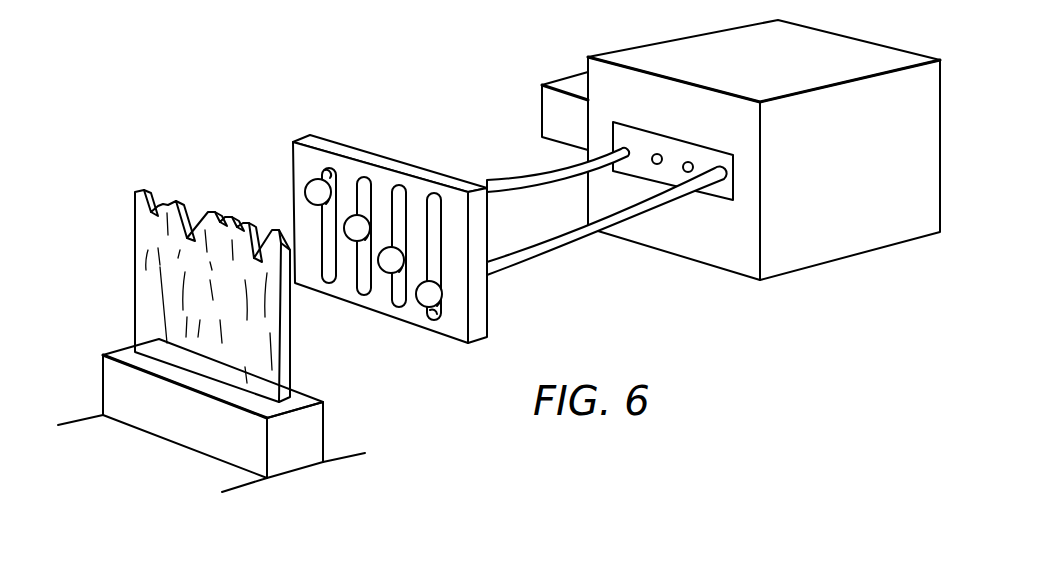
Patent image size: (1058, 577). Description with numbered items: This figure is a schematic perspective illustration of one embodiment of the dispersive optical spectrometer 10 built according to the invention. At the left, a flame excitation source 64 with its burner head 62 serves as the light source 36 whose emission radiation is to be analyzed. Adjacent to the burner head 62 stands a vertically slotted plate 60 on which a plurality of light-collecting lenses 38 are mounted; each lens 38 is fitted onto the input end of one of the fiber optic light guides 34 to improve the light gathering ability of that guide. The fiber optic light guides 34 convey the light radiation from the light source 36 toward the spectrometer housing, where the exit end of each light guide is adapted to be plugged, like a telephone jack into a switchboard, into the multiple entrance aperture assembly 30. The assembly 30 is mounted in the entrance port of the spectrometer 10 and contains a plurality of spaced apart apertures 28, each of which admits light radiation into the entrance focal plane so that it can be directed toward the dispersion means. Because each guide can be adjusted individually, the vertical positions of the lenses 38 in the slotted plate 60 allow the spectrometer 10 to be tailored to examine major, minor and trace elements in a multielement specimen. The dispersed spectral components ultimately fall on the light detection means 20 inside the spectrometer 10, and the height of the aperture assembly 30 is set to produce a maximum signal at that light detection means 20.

The dispersive optical spectrometer 10 is at (432, 103).
The light detection means 20 is at (563, 83).
The apertures 28 is at (692, 161).
The multiple entrance aperture assembly 30 is at (680, 137).
The fiber optic light guides 34 is at (588, 240).
The light source 36 is at (140, 286).
The light-collecting lens 38 is at (317, 191).
The vertically slotted plate 60 is at (293, 157).
The burner head 62 is at (325, 430).
The flame excitation source 64 is at (368, 443).